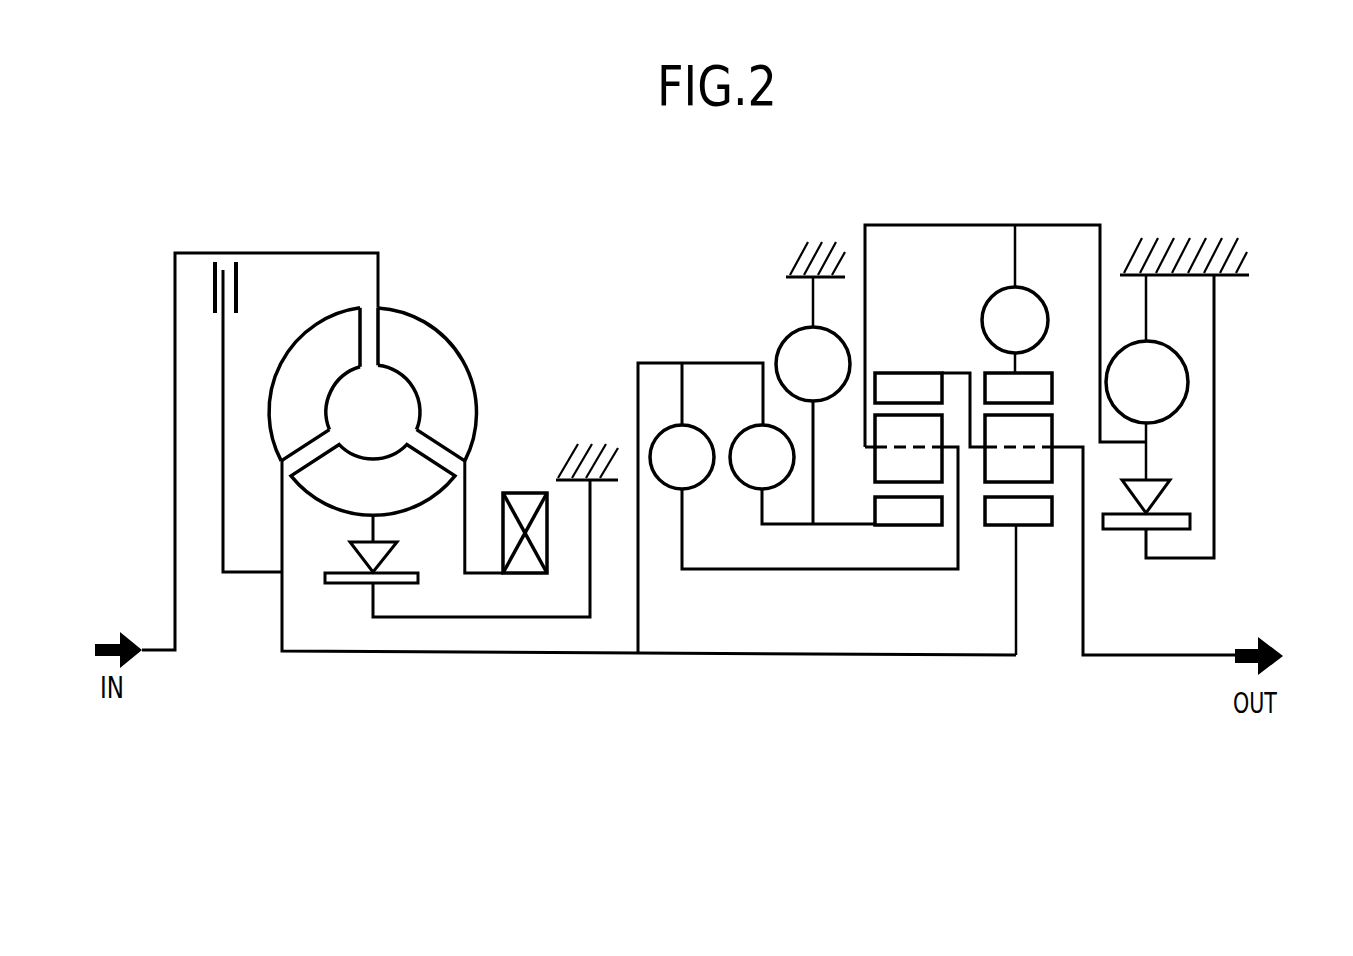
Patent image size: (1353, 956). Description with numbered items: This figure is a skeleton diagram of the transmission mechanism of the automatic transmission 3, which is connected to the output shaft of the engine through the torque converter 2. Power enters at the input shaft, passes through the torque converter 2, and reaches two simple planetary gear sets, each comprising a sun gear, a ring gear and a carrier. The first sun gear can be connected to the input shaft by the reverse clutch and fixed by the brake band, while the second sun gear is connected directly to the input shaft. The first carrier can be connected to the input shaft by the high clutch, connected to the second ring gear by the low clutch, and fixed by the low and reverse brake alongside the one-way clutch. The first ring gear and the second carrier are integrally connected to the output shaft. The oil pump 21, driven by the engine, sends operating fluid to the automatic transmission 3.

The torque converter 2 is at (470, 308).
The oil pump 21 is at (525, 490).
The automatic transmission 3 is at (1028, 200).